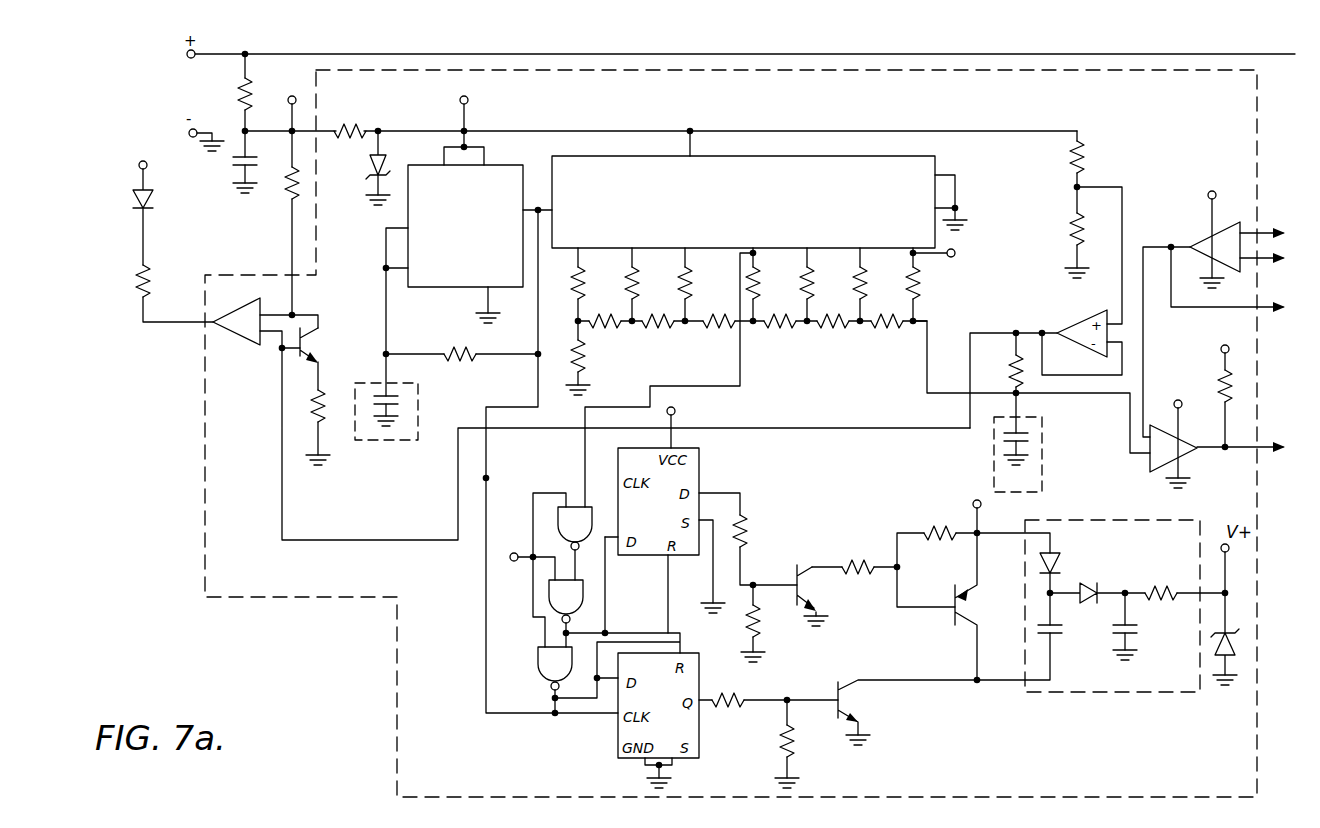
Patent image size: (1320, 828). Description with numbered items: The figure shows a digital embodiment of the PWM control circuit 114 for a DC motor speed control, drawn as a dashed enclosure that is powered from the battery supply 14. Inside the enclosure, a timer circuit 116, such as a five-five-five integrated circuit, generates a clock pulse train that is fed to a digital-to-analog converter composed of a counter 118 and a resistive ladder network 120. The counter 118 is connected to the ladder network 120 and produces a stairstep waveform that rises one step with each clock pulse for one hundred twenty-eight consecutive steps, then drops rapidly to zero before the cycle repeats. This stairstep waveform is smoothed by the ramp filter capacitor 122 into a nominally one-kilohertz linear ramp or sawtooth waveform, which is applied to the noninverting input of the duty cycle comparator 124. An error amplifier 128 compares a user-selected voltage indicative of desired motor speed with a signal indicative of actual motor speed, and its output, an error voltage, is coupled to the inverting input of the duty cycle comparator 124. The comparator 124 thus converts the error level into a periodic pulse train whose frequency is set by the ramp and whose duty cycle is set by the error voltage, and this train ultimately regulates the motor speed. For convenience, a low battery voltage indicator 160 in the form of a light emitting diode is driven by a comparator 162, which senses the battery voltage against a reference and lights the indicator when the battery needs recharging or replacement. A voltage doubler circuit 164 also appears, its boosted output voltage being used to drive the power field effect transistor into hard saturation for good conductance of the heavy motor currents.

The battery supply 14 is at (166, 66).
The low battery voltage indicator 160 is at (150, 203).
The comparator 162 is at (244, 338).
The timer circuit 116 is at (516, 166).
The counter 118 is at (810, 190).
The ladder network 120 is at (758, 332).
The control circuit 114 is at (1132, 152).
The error amplifier 128 is at (1194, 242).
The ramp filter capacitor 122 is at (992, 473).
The duty cycle comparator 124 is at (1196, 455).
The voltage doubler circuit 164 is at (799, 546).